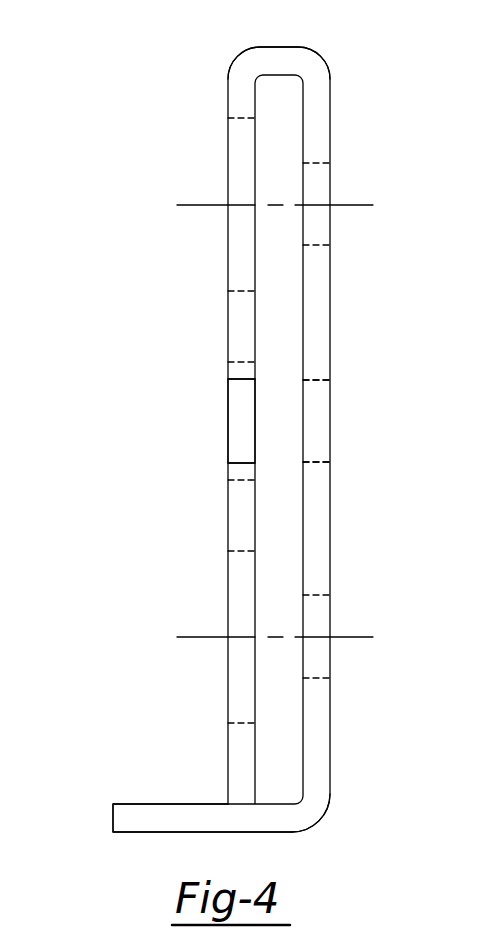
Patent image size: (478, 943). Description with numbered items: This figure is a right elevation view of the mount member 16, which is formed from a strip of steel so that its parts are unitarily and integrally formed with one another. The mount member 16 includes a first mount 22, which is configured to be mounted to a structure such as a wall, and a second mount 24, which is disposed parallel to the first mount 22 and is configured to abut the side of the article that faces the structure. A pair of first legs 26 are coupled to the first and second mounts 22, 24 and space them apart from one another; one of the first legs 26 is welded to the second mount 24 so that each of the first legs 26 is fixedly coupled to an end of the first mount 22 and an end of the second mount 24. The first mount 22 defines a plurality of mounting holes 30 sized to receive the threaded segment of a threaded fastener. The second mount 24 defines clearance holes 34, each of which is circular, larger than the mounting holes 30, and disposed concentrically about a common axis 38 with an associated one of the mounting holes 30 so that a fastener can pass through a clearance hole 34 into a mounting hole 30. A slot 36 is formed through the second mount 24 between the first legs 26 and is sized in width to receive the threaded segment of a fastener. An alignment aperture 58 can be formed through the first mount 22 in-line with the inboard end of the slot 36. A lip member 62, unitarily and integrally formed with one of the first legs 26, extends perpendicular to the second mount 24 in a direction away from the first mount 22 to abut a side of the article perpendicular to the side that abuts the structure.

The mount member 16 is at (116, 350).
The first mount 22 is at (323, 133).
The second mount 24 is at (238, 96).
The first legs 26 is at (285, 60).
The mounting holes 30 is at (317, 228).
The clearance holes 34 is at (234, 144).
The slot 36 is at (240, 415).
The common axis 38 is at (190, 206).
The alignment aperture 58 is at (317, 436).
The lip member 62 is at (167, 818).